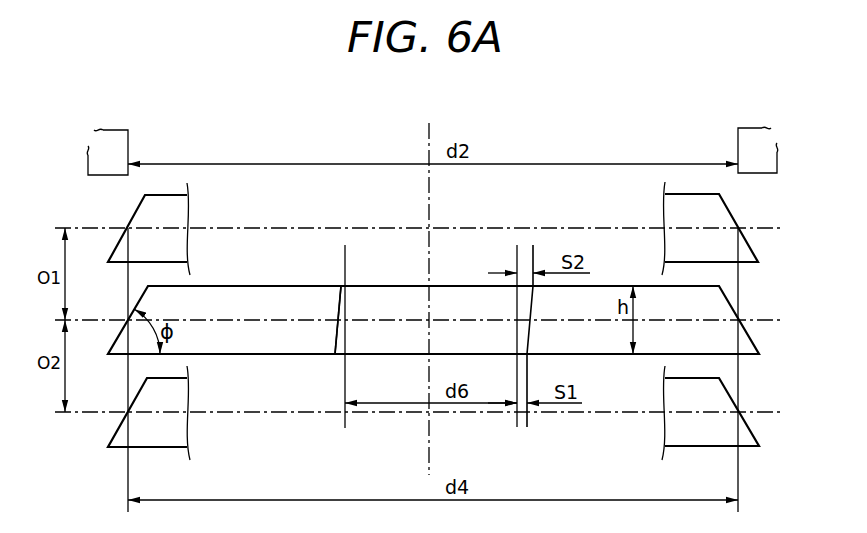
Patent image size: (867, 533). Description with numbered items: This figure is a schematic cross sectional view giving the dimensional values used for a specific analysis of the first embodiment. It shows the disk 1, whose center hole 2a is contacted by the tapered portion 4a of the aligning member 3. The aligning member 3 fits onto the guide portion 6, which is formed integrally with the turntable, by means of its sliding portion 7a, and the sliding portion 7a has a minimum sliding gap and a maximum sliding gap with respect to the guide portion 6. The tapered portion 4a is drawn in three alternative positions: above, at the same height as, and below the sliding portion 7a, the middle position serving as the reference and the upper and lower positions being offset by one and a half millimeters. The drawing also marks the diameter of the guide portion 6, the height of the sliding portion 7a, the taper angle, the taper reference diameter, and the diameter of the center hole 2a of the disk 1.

The disk 1 is at (752, 142).
The center hole 2a is at (128, 147).
The aligning member 3 is at (717, 390).
The tapered portion 4a is at (142, 203).
The guide portion 6 is at (345, 372).
The sliding portion 7a is at (335, 306).